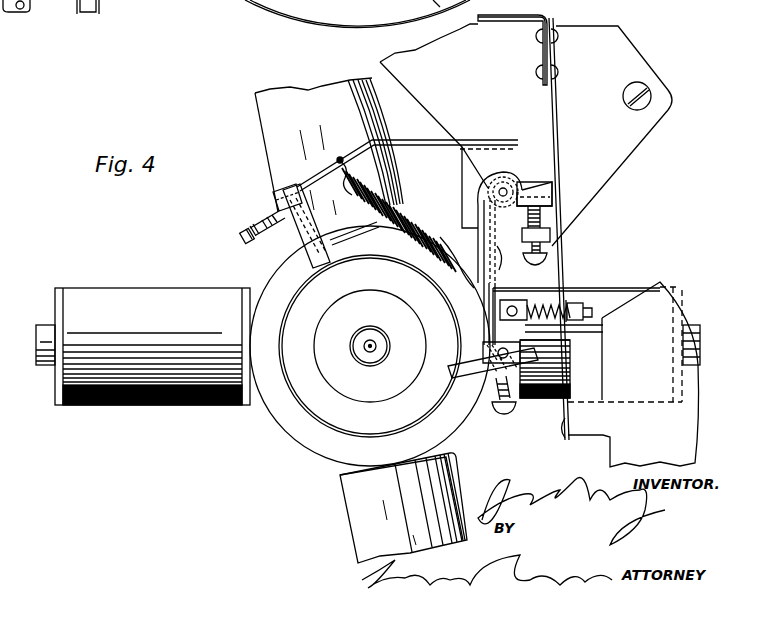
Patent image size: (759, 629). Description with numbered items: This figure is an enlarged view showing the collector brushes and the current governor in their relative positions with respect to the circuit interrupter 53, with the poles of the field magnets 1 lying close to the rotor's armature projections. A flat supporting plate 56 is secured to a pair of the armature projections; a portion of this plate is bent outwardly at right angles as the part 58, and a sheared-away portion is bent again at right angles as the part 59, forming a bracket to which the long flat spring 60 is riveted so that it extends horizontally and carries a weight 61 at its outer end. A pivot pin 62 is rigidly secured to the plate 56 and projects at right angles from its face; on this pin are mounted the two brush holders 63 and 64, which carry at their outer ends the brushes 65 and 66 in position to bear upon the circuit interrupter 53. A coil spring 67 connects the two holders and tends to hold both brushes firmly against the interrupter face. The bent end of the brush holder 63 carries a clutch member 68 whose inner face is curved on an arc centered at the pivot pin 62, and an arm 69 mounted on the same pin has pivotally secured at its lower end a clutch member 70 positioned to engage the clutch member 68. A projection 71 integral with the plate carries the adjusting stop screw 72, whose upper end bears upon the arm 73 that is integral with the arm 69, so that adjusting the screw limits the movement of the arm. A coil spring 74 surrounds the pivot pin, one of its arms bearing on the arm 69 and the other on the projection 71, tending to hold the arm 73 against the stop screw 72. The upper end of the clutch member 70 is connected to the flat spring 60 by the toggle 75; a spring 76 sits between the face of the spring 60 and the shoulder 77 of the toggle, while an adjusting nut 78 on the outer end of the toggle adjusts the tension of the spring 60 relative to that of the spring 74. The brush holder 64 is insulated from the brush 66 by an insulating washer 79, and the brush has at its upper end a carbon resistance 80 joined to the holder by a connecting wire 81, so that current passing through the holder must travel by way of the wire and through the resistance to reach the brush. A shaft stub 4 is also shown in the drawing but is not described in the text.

The field magnets 1 is at (108, 292).
The shaft stub 4 is at (36, 352).
The circuit interrupter 53 is at (302, 414).
The supporting plate 56 is at (612, 136).
The bent portion of plate 58 is at (524, 20).
The bracket portion 59 is at (541, 70).
The flat spring 60 is at (559, 120).
The weight 61 is at (633, 374).
The pivot pin 62 is at (510, 188).
The brush holder 63 is at (477, 218).
The brush holder 64 is at (434, 147).
The brush 65 is at (470, 400).
The brush 66 is at (311, 263).
The coil spring 67 is at (410, 210).
The clutch member 68 is at (533, 396).
The arm 69 is at (497, 292).
The clutch member 70 is at (501, 346).
The projection 71 is at (550, 233).
The adjusting stop screw 72 is at (548, 259).
The arm 73 is at (540, 194).
The coil spring 74 is at (509, 258).
The toggle 75 is at (530, 304).
The spring 76 is at (568, 305).
The shoulder 77 is at (540, 320).
The adjusting nut 78 is at (584, 308).
The insulating washer 79 is at (292, 188).
The carbon resistance 80 is at (270, 208).
The connecting wire 81 is at (284, 180).